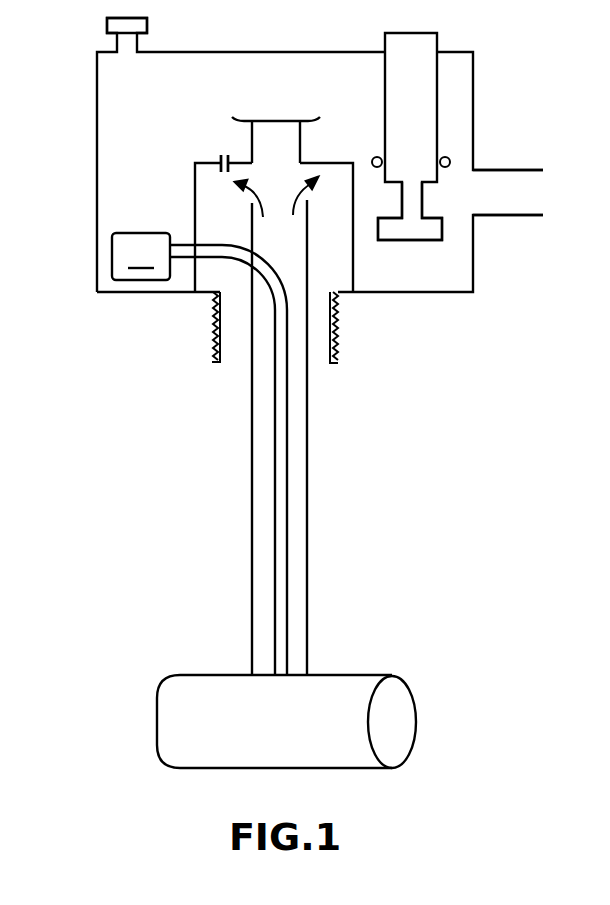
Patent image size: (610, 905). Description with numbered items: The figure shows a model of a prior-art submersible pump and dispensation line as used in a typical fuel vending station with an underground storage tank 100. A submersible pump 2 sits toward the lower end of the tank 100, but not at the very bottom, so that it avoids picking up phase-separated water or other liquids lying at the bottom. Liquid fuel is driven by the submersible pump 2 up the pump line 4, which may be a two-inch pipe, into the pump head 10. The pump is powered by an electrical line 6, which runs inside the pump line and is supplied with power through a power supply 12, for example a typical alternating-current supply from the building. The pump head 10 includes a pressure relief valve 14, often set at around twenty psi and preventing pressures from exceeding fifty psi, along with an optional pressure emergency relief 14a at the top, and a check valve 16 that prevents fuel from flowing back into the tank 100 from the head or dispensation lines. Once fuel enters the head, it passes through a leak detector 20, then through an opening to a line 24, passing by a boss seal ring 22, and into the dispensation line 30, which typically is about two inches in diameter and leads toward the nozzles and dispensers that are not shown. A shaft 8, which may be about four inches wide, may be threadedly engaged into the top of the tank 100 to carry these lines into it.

The submersible pump 2 is at (415, 705).
The pump line 4 is at (307, 465).
The electrical line 6 is at (272, 412).
The shaft 8 is at (343, 320).
The pump head 10 is at (96, 110).
The power supply 12 is at (141, 256).
The pressure relief valve 14 is at (217, 157).
The pressure emergency relief 14a is at (148, 28).
The check valve 16 is at (280, 120).
The leak detector 20 is at (437, 33).
The boss seal ring 22 is at (450, 157).
The line 24 is at (437, 200).
The dispensation line 30 is at (525, 170).
The tank 100 is at (516, 587).